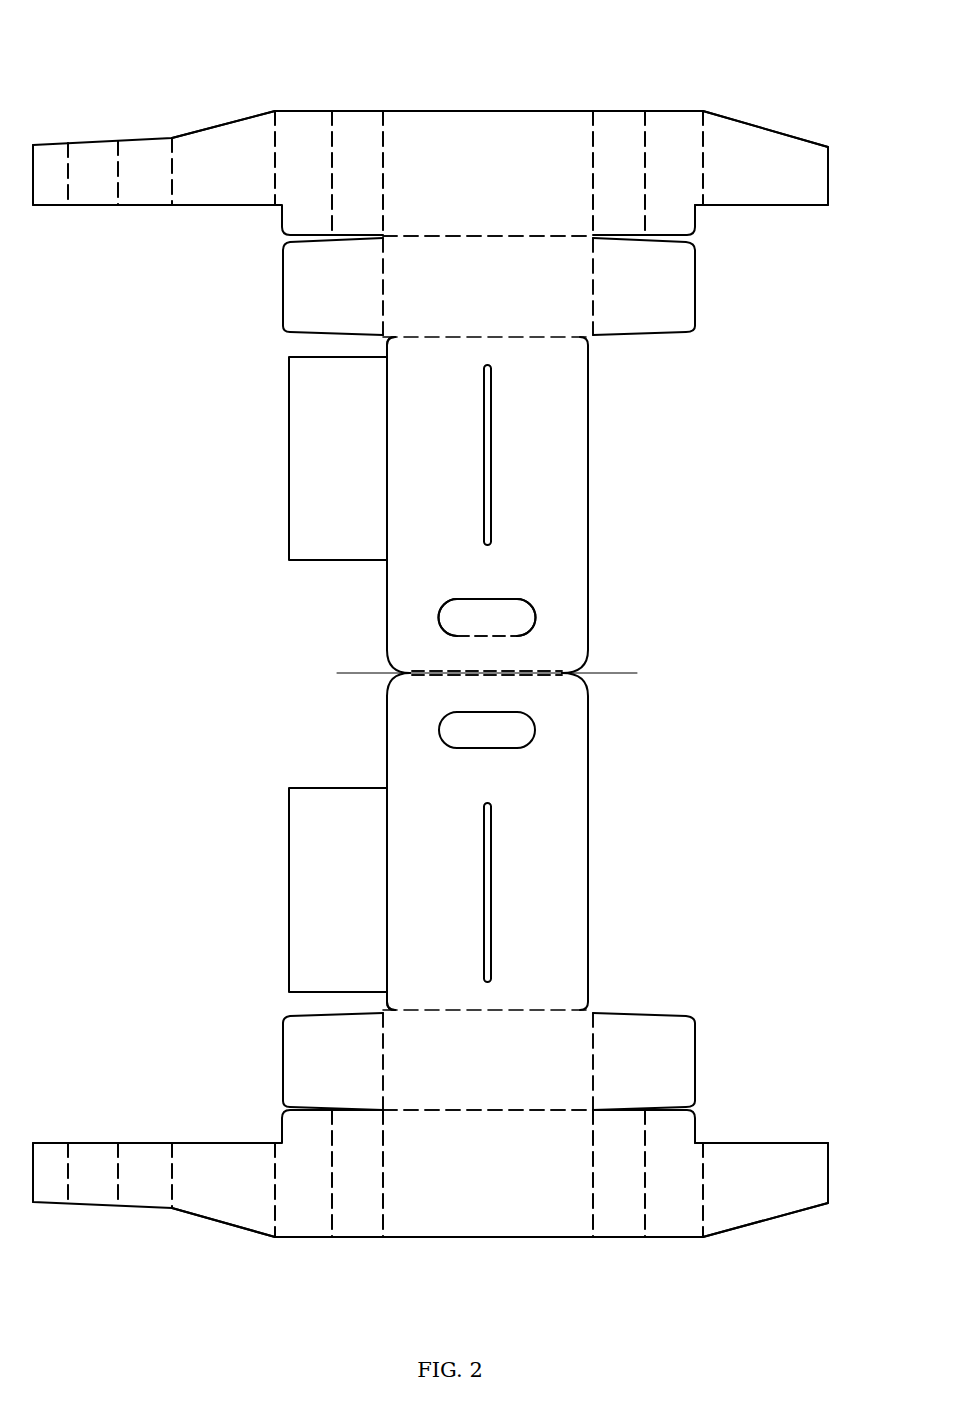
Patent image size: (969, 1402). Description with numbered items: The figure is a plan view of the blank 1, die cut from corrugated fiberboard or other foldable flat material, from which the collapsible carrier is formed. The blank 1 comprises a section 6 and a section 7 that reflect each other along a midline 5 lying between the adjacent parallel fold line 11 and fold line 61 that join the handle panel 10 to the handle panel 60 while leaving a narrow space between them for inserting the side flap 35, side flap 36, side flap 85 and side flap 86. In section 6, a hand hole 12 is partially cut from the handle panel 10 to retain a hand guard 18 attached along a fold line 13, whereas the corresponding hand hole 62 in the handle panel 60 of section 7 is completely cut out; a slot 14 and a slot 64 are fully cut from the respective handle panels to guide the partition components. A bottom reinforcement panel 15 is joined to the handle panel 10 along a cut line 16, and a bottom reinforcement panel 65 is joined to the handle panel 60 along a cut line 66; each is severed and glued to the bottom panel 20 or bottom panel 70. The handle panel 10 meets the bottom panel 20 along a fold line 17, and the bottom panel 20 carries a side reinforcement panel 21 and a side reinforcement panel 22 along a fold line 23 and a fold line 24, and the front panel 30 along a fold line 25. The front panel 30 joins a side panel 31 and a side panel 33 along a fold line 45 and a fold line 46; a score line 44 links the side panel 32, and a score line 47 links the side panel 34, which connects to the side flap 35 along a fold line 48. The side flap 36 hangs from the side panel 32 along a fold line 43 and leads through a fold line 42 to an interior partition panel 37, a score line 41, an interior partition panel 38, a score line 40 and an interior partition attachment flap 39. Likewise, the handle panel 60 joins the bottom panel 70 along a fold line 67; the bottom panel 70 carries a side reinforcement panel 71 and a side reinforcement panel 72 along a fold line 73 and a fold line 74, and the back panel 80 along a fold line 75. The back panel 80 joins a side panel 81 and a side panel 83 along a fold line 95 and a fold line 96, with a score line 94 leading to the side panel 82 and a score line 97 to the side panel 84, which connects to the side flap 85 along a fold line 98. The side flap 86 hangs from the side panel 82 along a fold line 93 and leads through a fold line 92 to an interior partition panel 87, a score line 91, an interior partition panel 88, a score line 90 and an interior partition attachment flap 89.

The blank 1 is at (838, 86).
The midline 5 is at (628, 673).
The section 6 is at (782, 451).
The section 7 is at (782, 875).
The handle panel 10 is at (508, 439).
The fold line 11 is at (503, 670).
The hand hole 12 is at (508, 598).
The fold line 13 is at (467, 638).
The slot 14 is at (491, 518).
The bottom reinforcement panel 15 is at (322, 461).
The cut line 16 is at (387, 465).
The fold line 17 is at (395, 337).
The hand guard 18 is at (475, 628).
The bottom panel 20 is at (475, 296).
The side reinforcement panel 21 is at (321, 296).
The side reinforcement panel 22 is at (630, 296).
The fold line 23 is at (384, 275).
The fold line 24 is at (592, 274).
The fold line 25 is at (392, 238).
The front panel 30 is at (473, 179).
The side panel 31 is at (343, 179).
The side panel 32 is at (290, 179).
The side panel 33 is at (605, 179).
The side panel 34 is at (658, 179).
The side flap 35 is at (740, 179).
The side flap 36 is at (208, 179).
The interior partition panel 37 is at (133, 179).
The interior partition panel 38 is at (81, 179).
The interior partition attachment flap 39 is at (38, 179).
The score line 40 is at (68, 152).
The score line 41 is at (118, 150).
The fold line 42 is at (172, 146).
The fold line 43 is at (275, 128).
The score line 44 is at (332, 128).
The fold line 45 is at (383, 128).
The fold line 46 is at (593, 128).
The score line 47 is at (645, 128).
The fold line 48 is at (703, 128).
The handle panel 60 is at (519, 863).
The fold line 61 is at (518, 675).
The hand hole 62 is at (466, 750).
The slot 64 is at (484, 908).
The bottom reinforcement panel 65 is at (322, 901).
The cut line 66 is at (387, 852).
The fold line 67 is at (395, 1007).
The bottom panel 70 is at (475, 1069).
The side reinforcement panel 71 is at (321, 1069).
The side reinforcement panel 72 is at (630, 1069).
The fold line 73 is at (383, 1032).
The fold line 74 is at (592, 1032).
The fold line 75 is at (582, 1110).
The back panel 80 is at (473, 1184).
The side panel 81 is at (343, 1184).
The side panel 82 is at (290, 1184).
The side panel 83 is at (605, 1184).
The side panel 84 is at (658, 1184).
The side flap 85 is at (740, 1184).
The side flap 86 is at (208, 1184).
The interior partition panel 87 is at (133, 1184).
The interior partition panel 88 is at (81, 1184).
The interior partition attachment flap 89 is at (38, 1184).
The score line 90 is at (68, 1200).
The score line 91 is at (118, 1203).
The fold line 92 is at (172, 1205).
The fold line 93 is at (275, 1226).
The score line 94 is at (332, 1227).
The fold line 95 is at (383, 1226).
The fold line 96 is at (593, 1226).
The score line 97 is at (645, 1226).
The fold line 98 is at (703, 1226).